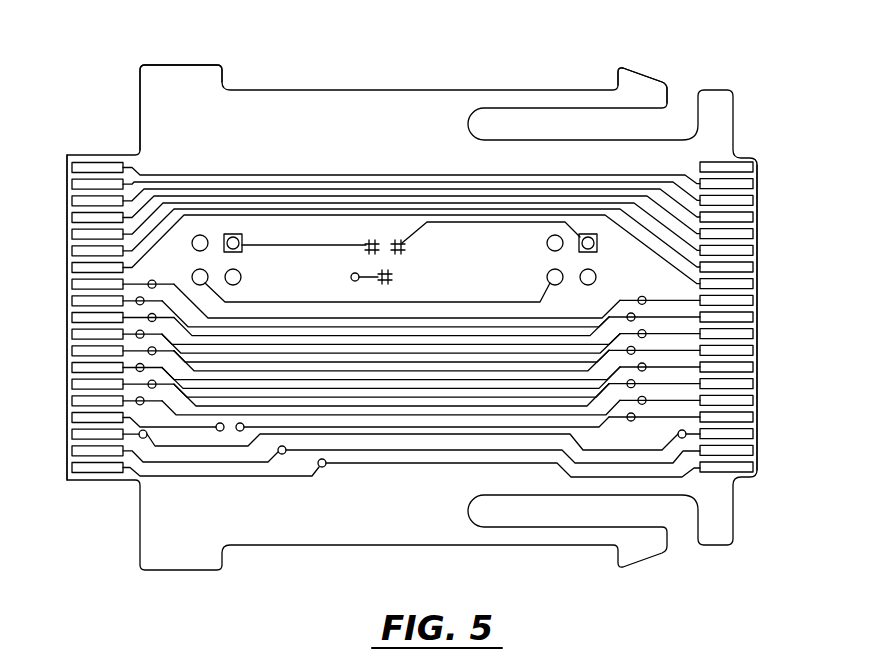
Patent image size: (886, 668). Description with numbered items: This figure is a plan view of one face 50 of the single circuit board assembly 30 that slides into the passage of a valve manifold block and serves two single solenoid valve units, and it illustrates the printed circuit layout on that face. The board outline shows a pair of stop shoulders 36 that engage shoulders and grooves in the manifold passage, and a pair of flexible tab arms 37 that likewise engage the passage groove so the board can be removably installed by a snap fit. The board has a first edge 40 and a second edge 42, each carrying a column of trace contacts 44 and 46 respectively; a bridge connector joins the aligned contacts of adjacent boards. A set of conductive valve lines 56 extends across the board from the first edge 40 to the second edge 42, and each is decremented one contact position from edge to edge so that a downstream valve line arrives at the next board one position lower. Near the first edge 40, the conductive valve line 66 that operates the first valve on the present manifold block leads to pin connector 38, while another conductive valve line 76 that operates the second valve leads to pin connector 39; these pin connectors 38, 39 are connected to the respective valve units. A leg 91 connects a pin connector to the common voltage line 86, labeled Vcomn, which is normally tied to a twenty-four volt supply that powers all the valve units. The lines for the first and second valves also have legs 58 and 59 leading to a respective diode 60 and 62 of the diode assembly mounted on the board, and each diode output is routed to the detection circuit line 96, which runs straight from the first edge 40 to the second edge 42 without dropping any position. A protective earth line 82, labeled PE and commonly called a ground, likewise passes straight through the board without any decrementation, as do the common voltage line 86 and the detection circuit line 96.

The single circuit board assembly 30 is at (404, 103).
The stop shoulders 36 is at (217, 73).
The flexible tab arms 37 is at (627, 97).
The pin connector 38 is at (285, 272).
The pin connector 39 is at (522, 263).
The first edge 40 is at (72, 153).
The second edge 42 is at (754, 155).
The trace contacts 44 is at (76, 333).
The trace contacts 46 is at (752, 321).
The face 50 is at (271, 147).
The conductive valve lines 56 is at (211, 190).
The leg 58 is at (292, 246).
The leg 59 is at (443, 223).
The diode 60 is at (374, 238).
The diode 62 is at (401, 238).
The conductive valve line 66 is at (150, 423).
The conductive valve line 76 is at (430, 425).
The protective earth line 82 is at (237, 464).
The common voltage line 86 is at (268, 435).
The leg 91 is at (313, 300).
The detection circuit line 96 is at (340, 466).